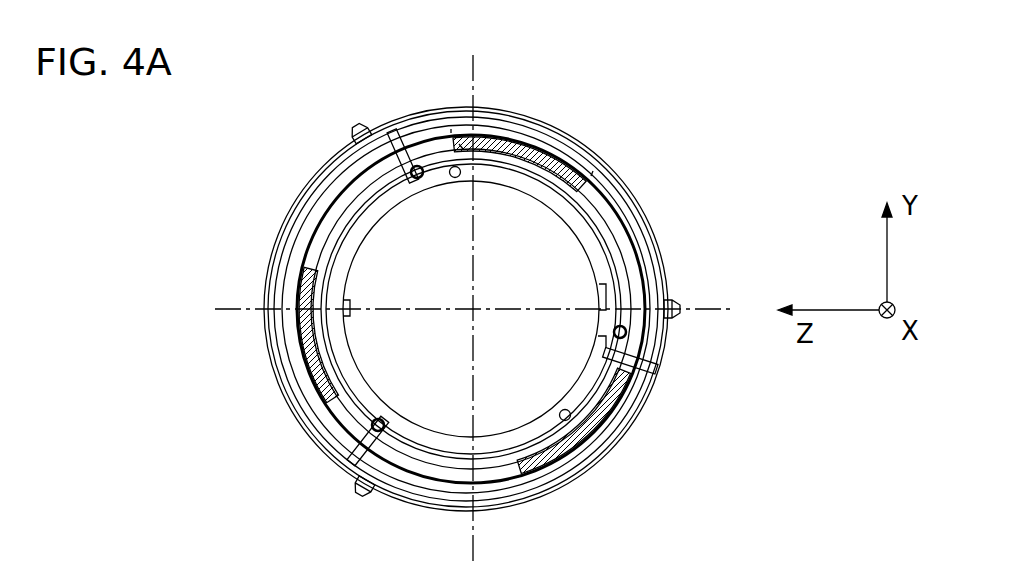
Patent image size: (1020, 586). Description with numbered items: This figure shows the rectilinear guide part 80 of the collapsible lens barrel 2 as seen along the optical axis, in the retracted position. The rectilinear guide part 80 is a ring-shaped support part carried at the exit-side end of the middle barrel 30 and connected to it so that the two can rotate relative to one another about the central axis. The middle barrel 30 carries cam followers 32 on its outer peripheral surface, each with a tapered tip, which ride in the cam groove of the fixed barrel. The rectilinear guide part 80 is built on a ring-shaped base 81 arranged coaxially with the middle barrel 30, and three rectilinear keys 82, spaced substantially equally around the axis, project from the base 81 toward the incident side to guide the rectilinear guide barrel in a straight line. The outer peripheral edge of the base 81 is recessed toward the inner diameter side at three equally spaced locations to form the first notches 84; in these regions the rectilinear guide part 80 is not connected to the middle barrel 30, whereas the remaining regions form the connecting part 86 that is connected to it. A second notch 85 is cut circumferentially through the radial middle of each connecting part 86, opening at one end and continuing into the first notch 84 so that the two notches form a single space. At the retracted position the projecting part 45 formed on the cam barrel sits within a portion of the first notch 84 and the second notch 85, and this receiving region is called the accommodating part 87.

The lens barrel 2 is at (280, 166).
The middle barrel 30 is at (668, 232).
The cam follower 32 is at (362, 129).
The projecting part 45 is at (582, 171).
The rectilinear guide part 80 is at (645, 349).
The base 81 is at (598, 293).
The rectilinear key 82 is at (606, 221).
The first notch 84 is at (543, 140).
The second notch 85 is at (466, 148).
The connecting part 86 is at (422, 137).
The accommodating part 87 is at (515, 57).